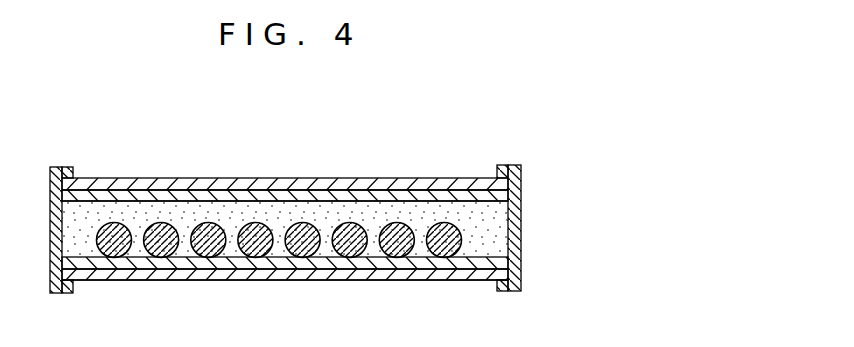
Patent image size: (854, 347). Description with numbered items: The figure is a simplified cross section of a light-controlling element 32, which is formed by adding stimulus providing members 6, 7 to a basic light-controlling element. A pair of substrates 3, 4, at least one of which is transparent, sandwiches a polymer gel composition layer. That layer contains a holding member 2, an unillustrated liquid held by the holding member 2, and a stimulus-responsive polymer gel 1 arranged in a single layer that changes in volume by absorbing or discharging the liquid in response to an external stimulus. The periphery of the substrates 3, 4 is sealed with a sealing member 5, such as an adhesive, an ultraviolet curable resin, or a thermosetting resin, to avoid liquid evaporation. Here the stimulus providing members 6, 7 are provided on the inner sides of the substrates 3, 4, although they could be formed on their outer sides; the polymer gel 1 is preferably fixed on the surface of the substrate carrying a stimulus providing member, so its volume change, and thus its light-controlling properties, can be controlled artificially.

The stimulus-responsive polymer gel 1 is at (260, 257).
The holding member 2 is at (352, 207).
The substrate 3 is at (455, 281).
The substrate 4 is at (440, 182).
The sealing member 5 is at (521, 235).
The stimulus providing member 6 is at (163, 193).
The stimulus providing member 7 is at (145, 283).
The light-controlling element 32 is at (578, 122).